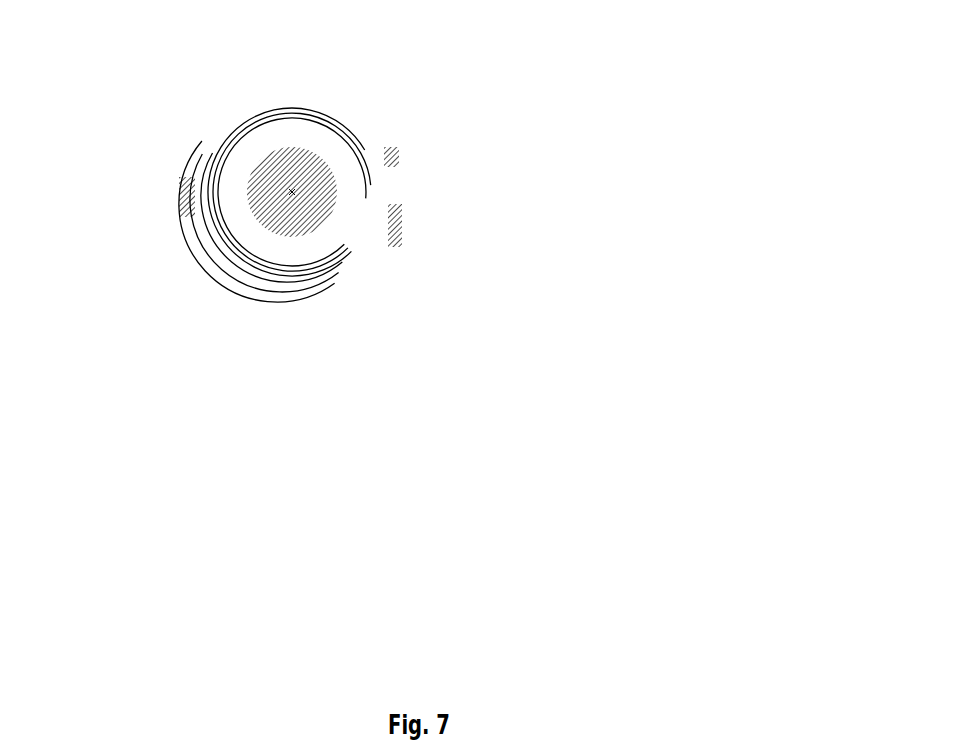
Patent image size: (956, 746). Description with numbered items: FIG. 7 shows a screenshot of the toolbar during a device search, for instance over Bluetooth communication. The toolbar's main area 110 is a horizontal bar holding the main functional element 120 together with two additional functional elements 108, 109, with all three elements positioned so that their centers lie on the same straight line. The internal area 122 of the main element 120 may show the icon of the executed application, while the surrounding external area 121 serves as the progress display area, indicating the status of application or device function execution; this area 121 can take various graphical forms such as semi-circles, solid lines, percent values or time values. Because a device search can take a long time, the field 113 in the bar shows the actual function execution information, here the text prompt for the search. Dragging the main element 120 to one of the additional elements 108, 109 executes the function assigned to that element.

The additional functional element 108 is at (113, 163).
The additional functional element 109 is at (775, 162).
The main area 110 is at (658, 150).
The field 113 is at (538, 163).
The main functional element 120 is at (303, 102).
The external area 121 is at (305, 292).
The internal area 122 is at (336, 184).